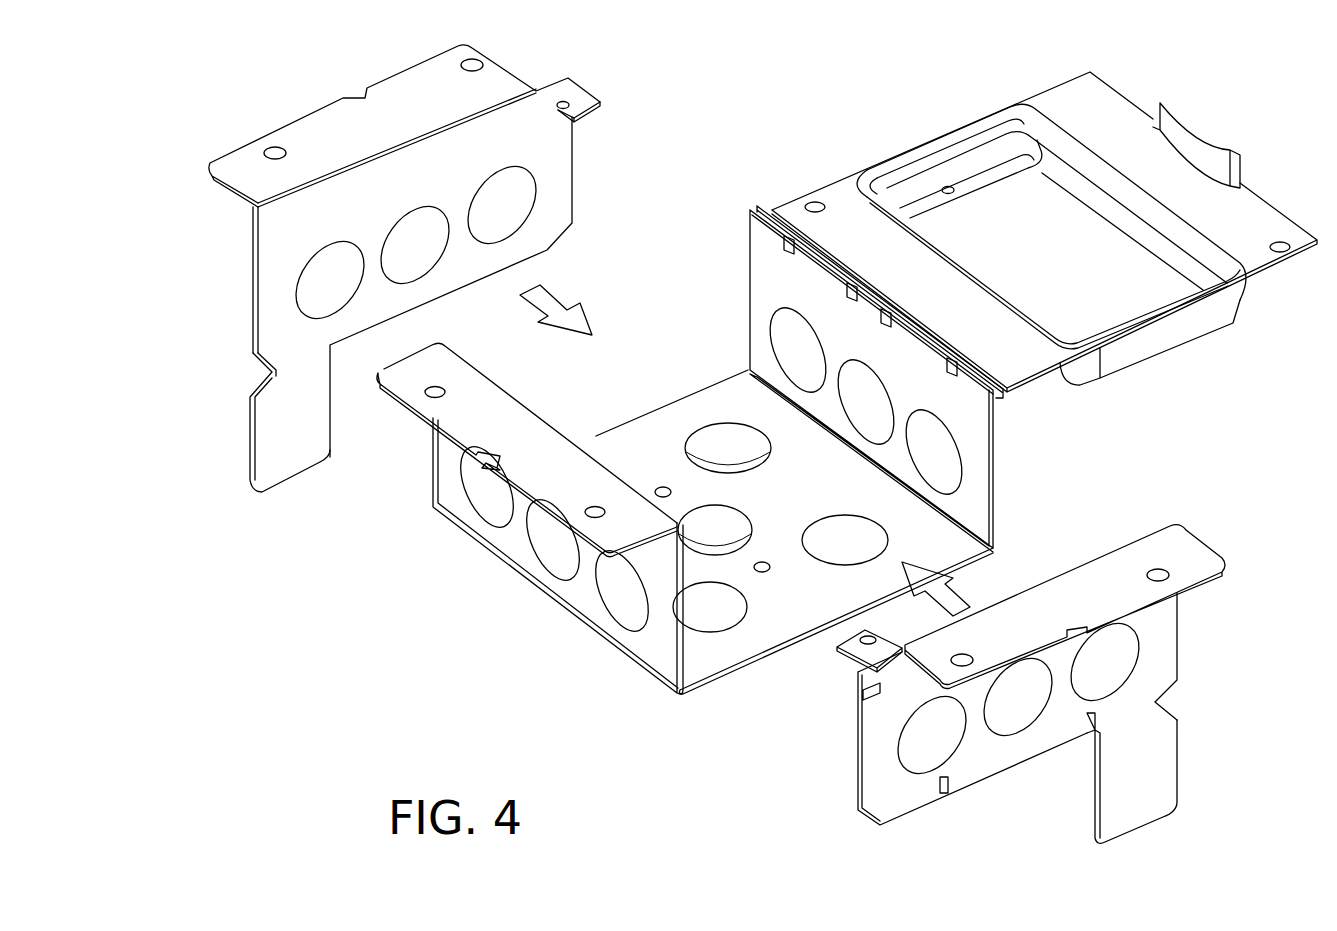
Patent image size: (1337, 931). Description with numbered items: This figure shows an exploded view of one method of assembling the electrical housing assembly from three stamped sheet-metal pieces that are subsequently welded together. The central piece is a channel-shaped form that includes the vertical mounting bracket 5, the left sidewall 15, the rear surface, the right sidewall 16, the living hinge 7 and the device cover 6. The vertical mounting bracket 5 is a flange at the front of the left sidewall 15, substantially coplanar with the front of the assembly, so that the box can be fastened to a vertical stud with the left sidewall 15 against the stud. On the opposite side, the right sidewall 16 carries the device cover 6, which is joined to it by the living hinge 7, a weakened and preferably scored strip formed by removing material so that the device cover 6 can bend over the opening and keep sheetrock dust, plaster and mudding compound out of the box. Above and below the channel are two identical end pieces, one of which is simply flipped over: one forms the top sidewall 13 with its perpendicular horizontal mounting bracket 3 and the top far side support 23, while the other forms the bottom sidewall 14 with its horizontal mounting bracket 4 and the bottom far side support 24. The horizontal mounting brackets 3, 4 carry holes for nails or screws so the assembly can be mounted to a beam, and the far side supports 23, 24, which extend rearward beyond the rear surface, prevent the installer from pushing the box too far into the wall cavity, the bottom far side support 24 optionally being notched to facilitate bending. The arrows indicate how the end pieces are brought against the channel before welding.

The horizontal mounting bracket 3 is at (432, 297).
The horizontal mounting bracket 4 is at (1033, 670).
The vertical mounting bracket 5 is at (413, 388).
The device cover 6 is at (1105, 105).
The living hinge 7 is at (820, 264).
The top sidewall 13 is at (553, 187).
The bottom sidewall 14 is at (977, 758).
The left sidewall 15 is at (510, 532).
The right sidewall 16 is at (972, 433).
The top far side support 23 is at (288, 463).
The bottom far side support 24 is at (1158, 790).